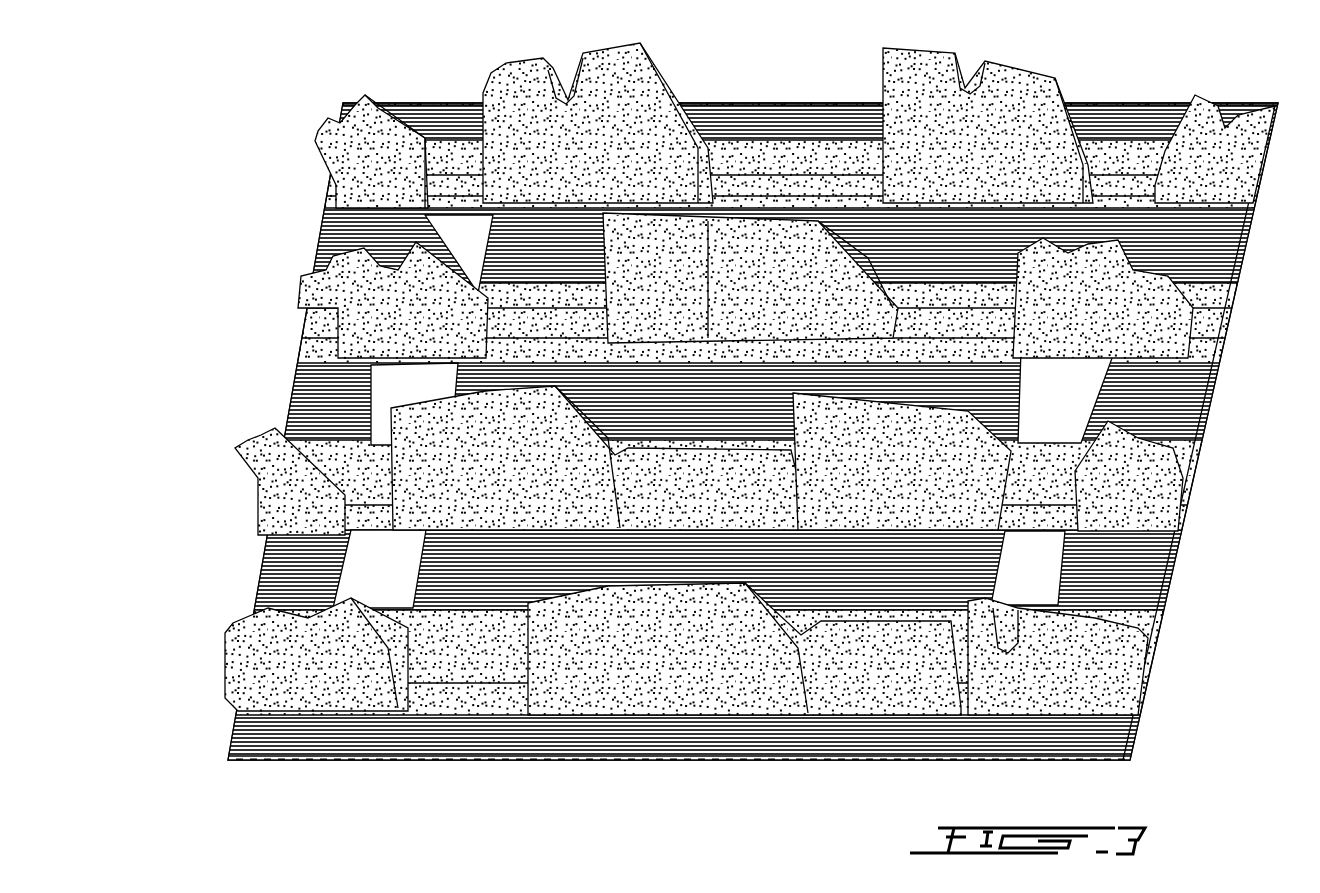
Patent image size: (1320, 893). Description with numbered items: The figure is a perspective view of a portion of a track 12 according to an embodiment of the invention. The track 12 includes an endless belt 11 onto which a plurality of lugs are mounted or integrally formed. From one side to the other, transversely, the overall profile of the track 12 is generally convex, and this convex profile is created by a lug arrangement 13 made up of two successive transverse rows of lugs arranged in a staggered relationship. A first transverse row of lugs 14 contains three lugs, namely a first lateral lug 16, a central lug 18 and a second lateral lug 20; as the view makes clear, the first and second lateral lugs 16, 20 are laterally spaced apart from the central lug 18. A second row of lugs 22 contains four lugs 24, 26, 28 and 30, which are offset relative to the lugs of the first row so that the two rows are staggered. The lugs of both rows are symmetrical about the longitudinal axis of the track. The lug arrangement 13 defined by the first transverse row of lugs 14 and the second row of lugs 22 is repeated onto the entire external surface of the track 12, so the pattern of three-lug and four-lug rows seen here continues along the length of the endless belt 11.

The track 12 is at (736, 434).
The endless belt 11 is at (1213, 227).
The lug arrangement 13 is at (1094, 616).
The first transverse row of lugs 14 is at (1053, 704).
The first lateral lug 16 is at (360, 617).
The central lug 18 is at (640, 657).
The second lateral lug 20 is at (987, 660).
The second row of lugs 22 is at (1159, 508).
The lug 24 is at (337, 487).
The lug 26 is at (450, 456).
The lug 28 is at (1010, 445).
The lug 30 is at (1125, 490).